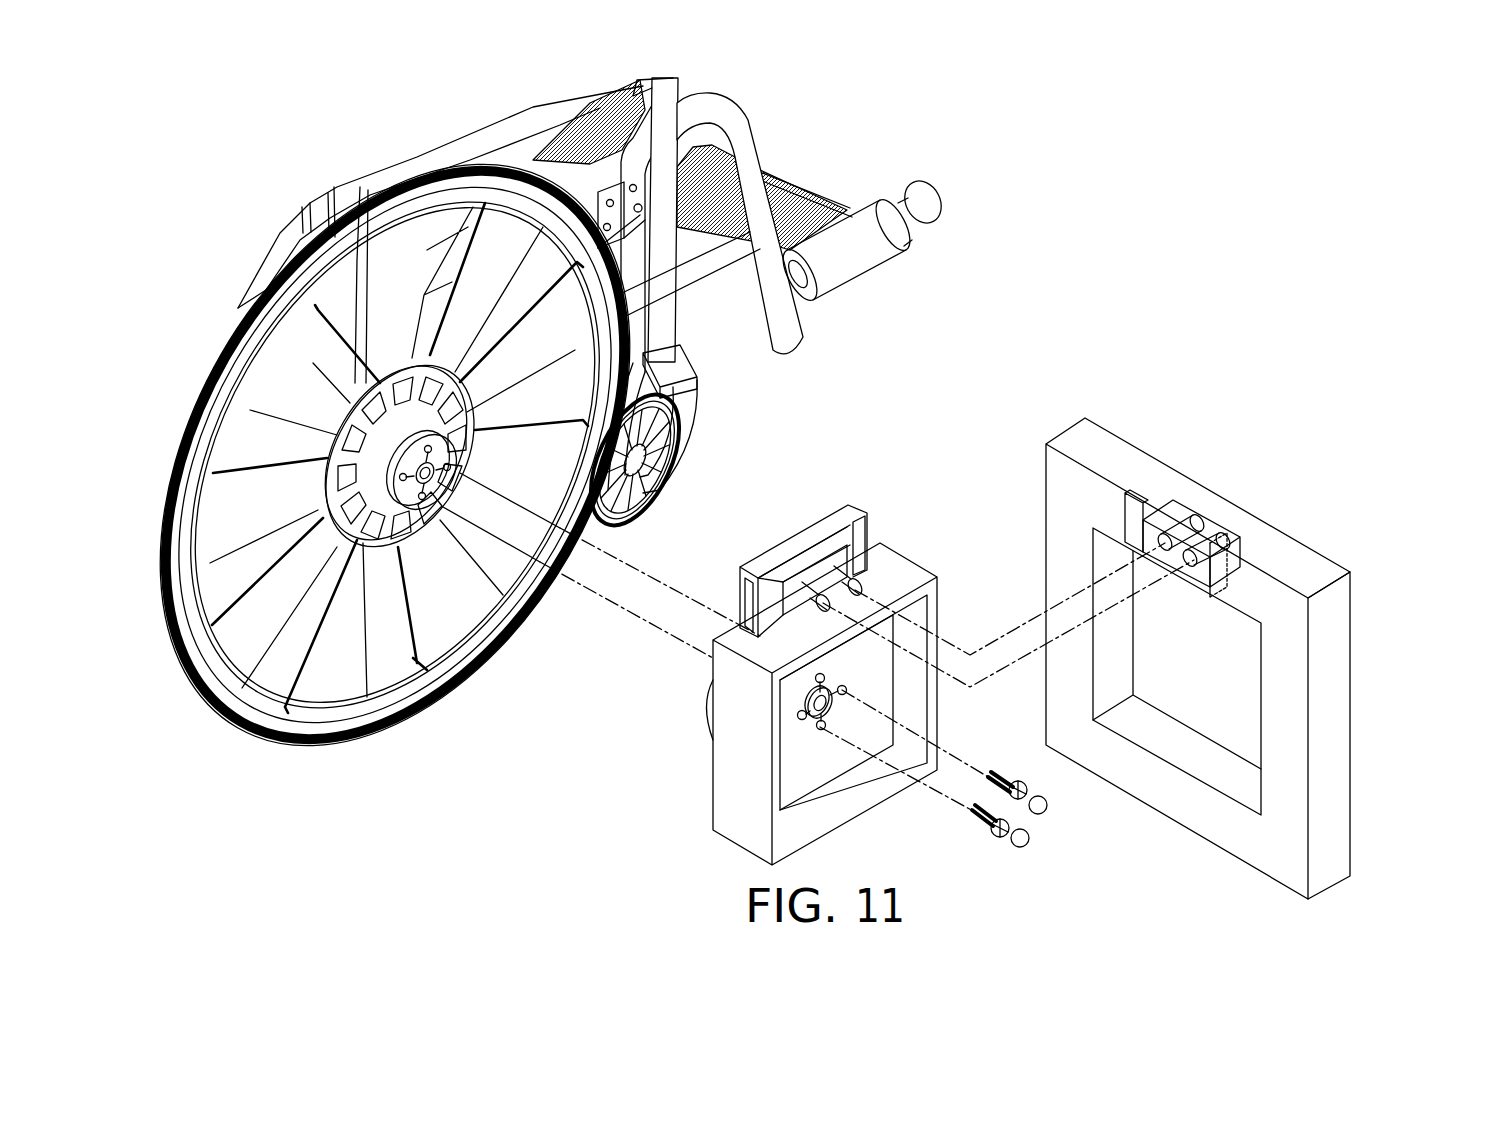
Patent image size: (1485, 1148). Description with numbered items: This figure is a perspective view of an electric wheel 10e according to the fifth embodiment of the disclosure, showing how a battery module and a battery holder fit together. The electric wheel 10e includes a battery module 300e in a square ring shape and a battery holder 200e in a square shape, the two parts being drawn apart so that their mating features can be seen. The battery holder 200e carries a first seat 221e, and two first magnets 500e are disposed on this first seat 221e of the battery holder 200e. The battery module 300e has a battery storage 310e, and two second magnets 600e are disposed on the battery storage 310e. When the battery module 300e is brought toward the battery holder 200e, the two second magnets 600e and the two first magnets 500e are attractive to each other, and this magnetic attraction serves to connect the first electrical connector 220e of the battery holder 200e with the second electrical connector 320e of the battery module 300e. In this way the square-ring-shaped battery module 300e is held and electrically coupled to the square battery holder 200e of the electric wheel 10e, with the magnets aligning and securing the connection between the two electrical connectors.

The electric wheel 10e is at (205, 716).
The battery holder 200e is at (715, 851).
The first electrical connector 220e is at (806, 510).
The first seat 221e is at (813, 537).
The first magnets 500e is at (772, 583).
The battery module 300e is at (1243, 641).
The battery storage 310e is at (1333, 672).
The second electrical connector 320e is at (1190, 478).
The second magnets 600e is at (1135, 497).